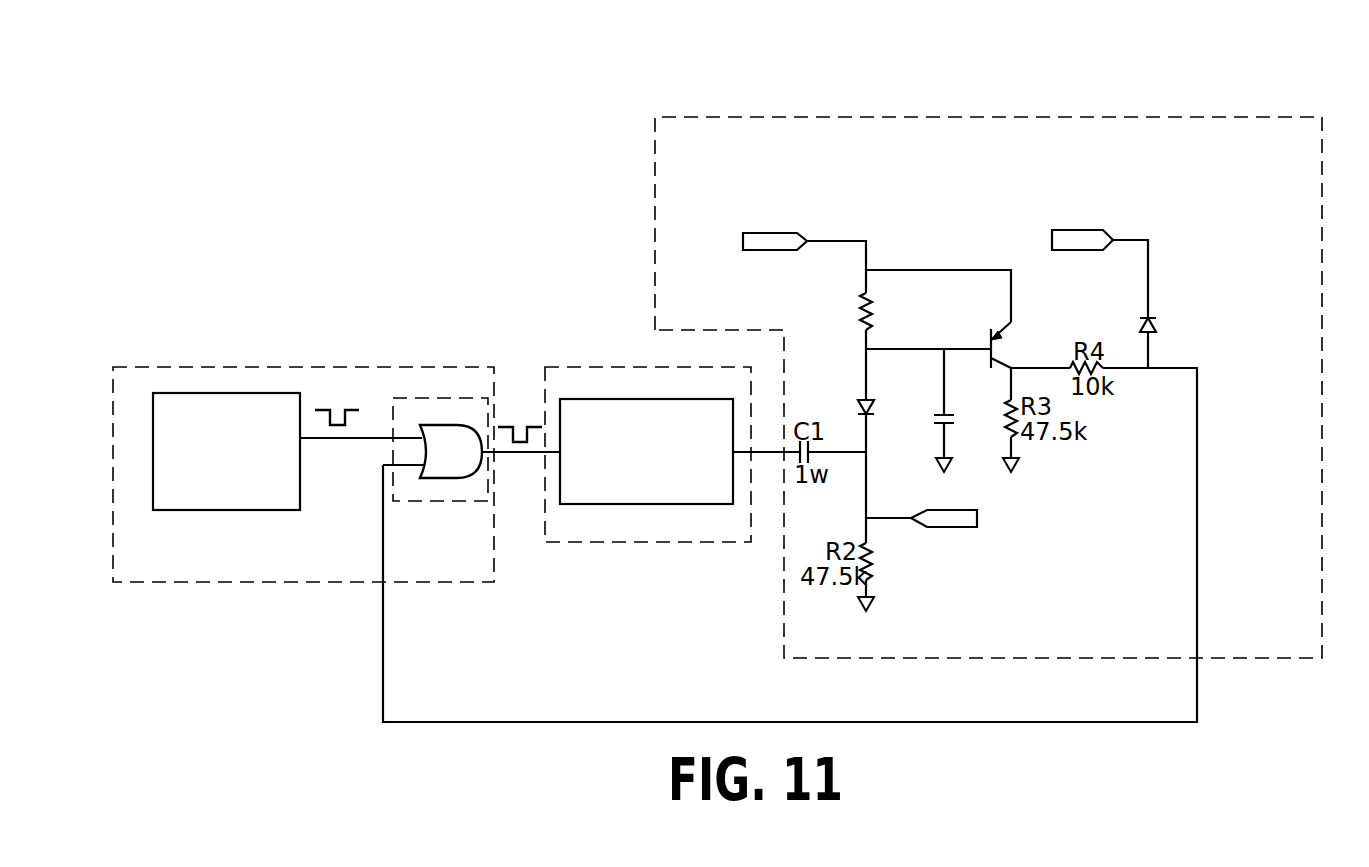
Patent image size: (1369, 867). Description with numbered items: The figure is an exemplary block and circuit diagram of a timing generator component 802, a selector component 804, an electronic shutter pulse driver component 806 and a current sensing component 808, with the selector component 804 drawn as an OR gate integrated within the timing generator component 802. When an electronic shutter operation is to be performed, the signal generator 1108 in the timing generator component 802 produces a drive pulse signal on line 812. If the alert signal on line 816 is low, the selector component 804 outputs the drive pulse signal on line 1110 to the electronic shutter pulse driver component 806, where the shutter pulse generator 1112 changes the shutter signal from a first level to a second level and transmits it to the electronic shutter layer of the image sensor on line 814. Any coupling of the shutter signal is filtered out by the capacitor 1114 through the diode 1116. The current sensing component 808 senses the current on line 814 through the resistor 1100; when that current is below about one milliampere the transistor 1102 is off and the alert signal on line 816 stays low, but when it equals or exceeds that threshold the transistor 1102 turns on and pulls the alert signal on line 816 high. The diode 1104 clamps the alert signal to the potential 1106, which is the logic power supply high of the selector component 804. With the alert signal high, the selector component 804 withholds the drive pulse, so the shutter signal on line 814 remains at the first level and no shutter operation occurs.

The timing generator component 802 is at (318, 367).
The signal generator 1108 is at (183, 510).
The line 812 is at (347, 438).
The selector component 804 is at (455, 502).
The line 1110 is at (527, 455).
The electronic shutter pulse driver component 806 is at (578, 367).
The shutter pulse generator 1112 is at (700, 504).
The current sensing component 808 is at (925, 117).
The line 814 is at (768, 233).
The resistor 1100 is at (822, 305).
The transistor 1102 is at (1018, 346).
The diode 1104 is at (1204, 328).
The potential 1106 is at (1072, 230).
The capacitor 1114 is at (952, 428).
The diode 1116 is at (872, 428).
The line 816 is at (383, 700).